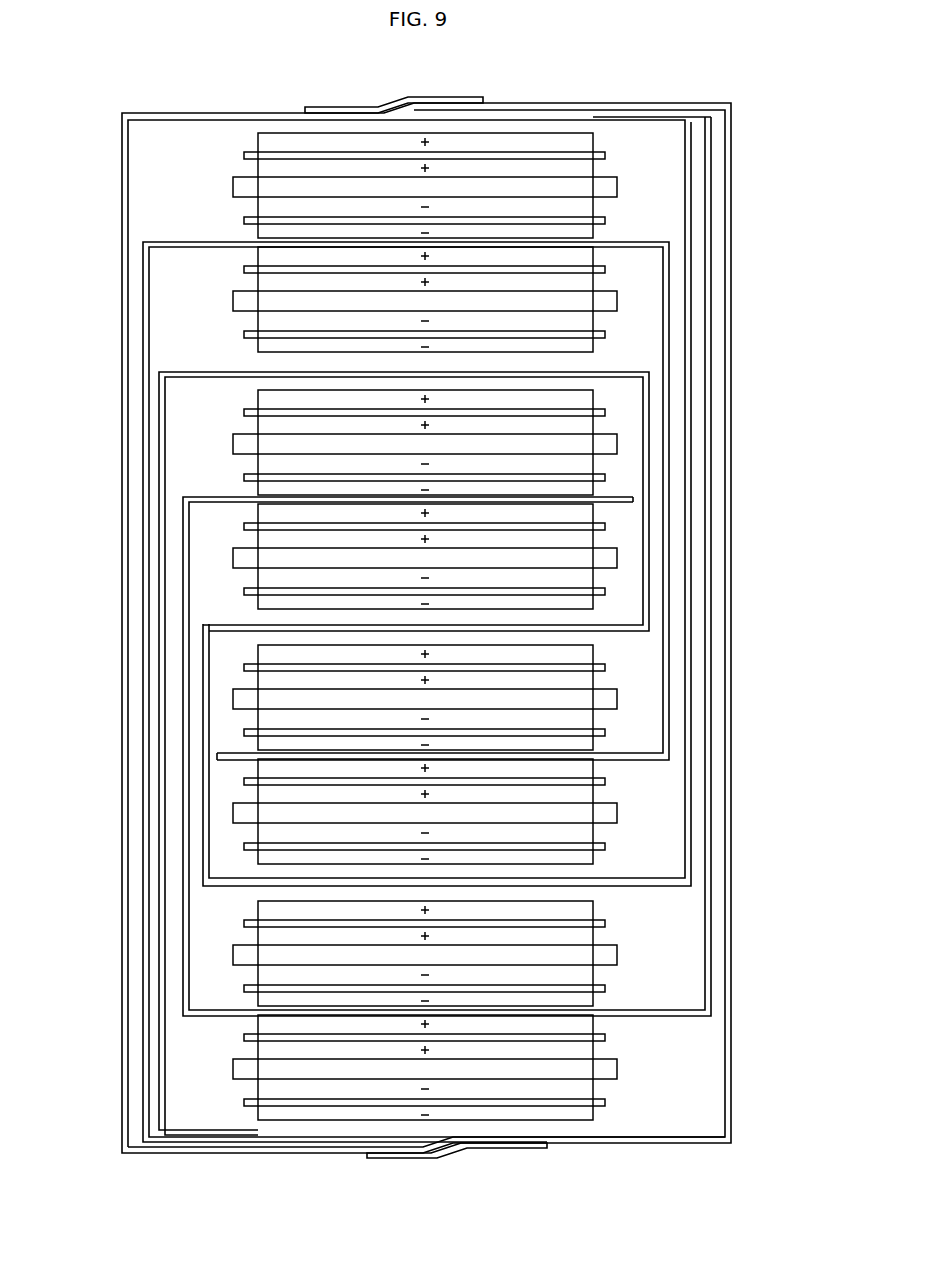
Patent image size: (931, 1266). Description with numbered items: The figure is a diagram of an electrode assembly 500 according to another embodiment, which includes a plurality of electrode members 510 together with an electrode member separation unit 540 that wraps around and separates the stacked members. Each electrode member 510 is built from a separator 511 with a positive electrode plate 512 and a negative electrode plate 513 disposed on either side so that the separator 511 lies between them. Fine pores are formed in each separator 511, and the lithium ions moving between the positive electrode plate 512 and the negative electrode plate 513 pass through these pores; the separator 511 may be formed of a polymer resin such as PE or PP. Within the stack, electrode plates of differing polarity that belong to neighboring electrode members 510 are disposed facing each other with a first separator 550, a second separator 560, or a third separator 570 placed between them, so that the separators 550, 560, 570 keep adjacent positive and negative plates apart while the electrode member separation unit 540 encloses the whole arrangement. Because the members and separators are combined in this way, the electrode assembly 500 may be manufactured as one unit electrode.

The electrode assembly 500 is at (80, 65).
The electrode member 510 is at (360, 591).
The separator 511 is at (606, 157).
The positive electrode plate 512 is at (594, 132).
The negative electrode plate 513 is at (604, 214).
The electrode member separation unit 540 is at (695, 103).
The first separator 550 is at (633, 497).
The second separator 560 is at (630, 632).
The third separator 570 is at (630, 762).